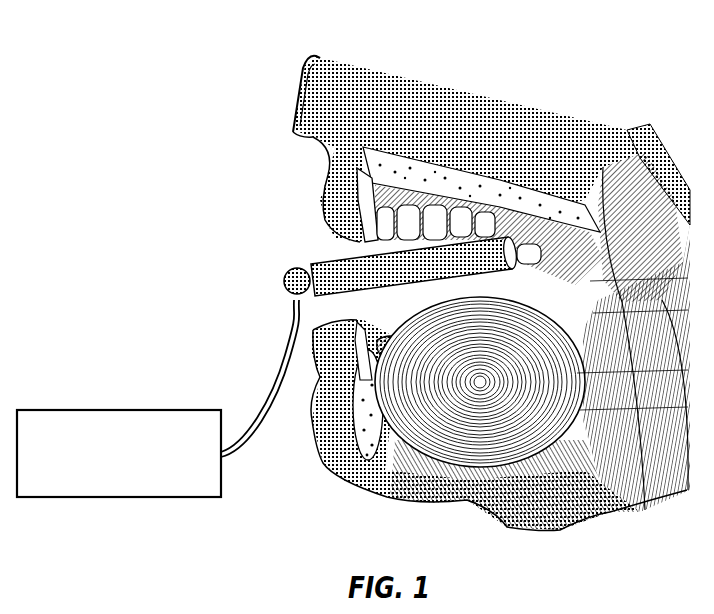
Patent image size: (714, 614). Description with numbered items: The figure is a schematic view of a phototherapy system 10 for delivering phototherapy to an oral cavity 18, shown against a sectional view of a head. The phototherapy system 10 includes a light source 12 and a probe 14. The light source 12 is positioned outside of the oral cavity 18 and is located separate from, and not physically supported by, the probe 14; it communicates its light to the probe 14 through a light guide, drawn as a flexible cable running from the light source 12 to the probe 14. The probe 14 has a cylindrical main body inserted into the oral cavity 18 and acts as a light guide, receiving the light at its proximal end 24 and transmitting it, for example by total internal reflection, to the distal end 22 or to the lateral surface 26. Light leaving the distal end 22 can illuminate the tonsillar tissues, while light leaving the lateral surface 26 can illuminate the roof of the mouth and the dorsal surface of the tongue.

The phototherapy system 10 is at (117, 59).
The light source 12 is at (103, 491).
The probe 14 is at (327, 277).
The oral cavity 18 is at (447, 186).
The distal end 22 is at (510, 237).
The proximal end 24 is at (290, 274).
The lateral surface 26 is at (417, 263).